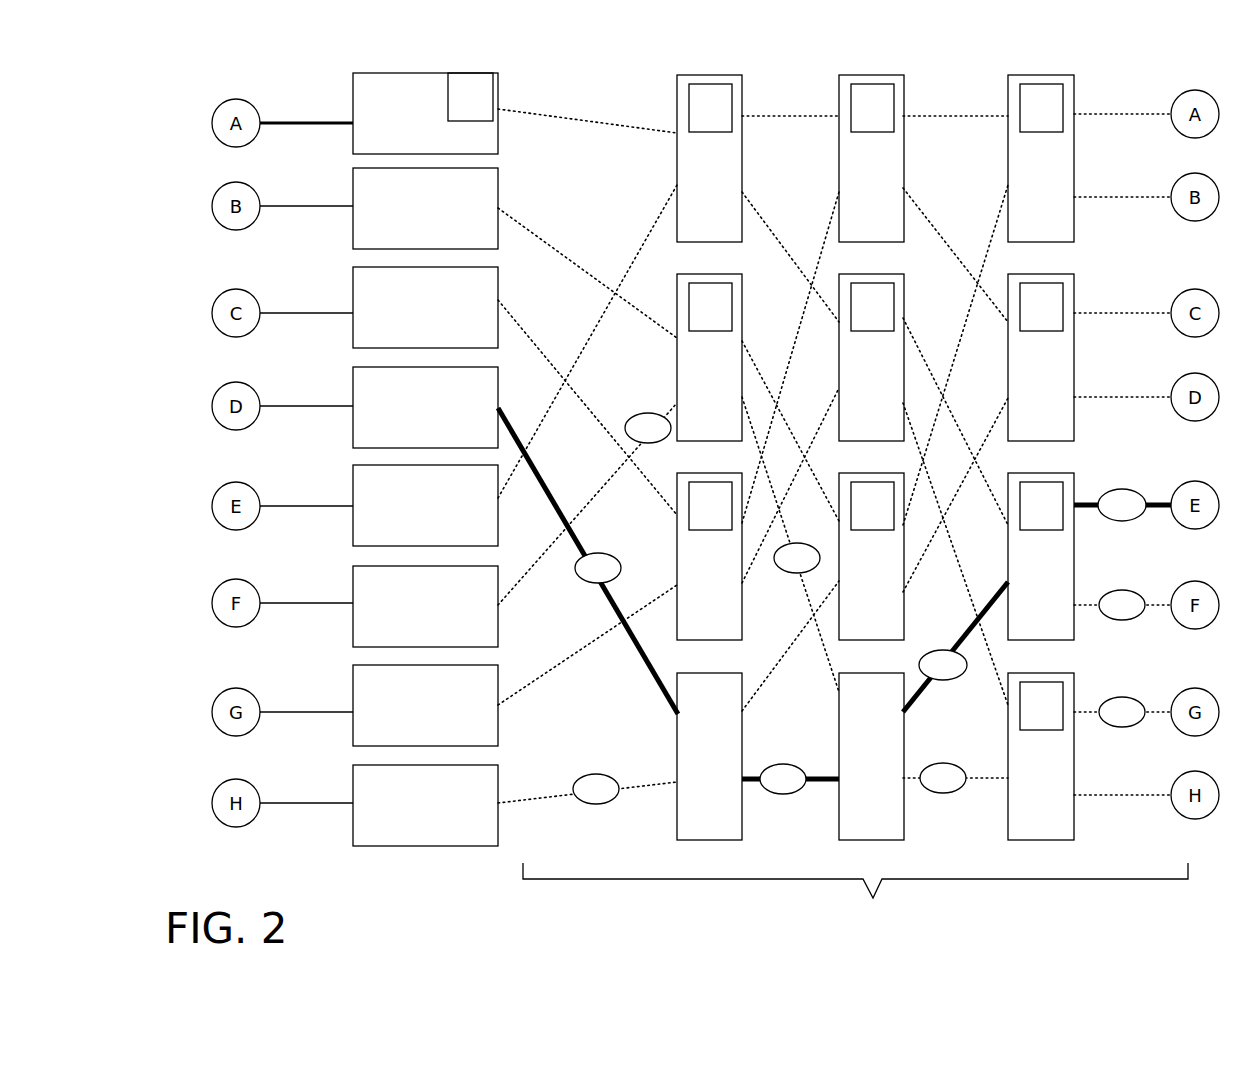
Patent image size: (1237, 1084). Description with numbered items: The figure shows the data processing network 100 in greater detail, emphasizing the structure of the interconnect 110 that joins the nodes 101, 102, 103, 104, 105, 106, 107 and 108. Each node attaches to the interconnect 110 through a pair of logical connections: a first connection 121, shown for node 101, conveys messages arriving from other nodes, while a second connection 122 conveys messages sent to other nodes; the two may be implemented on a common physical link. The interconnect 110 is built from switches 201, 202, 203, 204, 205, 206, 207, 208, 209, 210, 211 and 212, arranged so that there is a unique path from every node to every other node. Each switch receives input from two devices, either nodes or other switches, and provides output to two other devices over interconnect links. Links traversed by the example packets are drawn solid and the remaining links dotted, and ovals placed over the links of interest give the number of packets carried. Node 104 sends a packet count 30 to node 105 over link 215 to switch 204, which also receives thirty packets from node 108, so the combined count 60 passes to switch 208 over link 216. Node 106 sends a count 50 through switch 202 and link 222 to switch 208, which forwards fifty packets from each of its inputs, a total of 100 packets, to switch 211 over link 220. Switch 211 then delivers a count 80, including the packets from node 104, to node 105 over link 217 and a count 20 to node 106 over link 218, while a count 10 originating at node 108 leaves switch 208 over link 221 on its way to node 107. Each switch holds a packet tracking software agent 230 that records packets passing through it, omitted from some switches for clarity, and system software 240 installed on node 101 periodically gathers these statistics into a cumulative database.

The node 101 is at (411, 125).
The node 102 is at (411, 220).
The node 103 is at (411, 319).
The node 104 is at (411, 419).
The node 105 is at (411, 517).
The node 106 is at (411, 618).
The node 107 is at (411, 717).
The node 108 is at (411, 817).
The interconnect 110 is at (873, 898).
The first connection 121 is at (312, 120).
The second connection 122 is at (529, 112).
The switch 201 is at (694, 234).
The switch 202 is at (694, 433).
The switch 203 is at (694, 632).
The switch 204 is at (694, 832).
The switch 205 is at (856, 234).
The switch 206 is at (856, 433).
The switch 207 is at (856, 632).
The switch 208 is at (856, 832).
The switch 209 is at (1026, 234).
The switch 210 is at (1026, 433).
The switch 211 is at (1026, 632).
The switch 212 is at (1026, 832).
The link 215 is at (648, 661).
The link 216 is at (828, 788).
The link 217 is at (1079, 512).
The link 218 is at (1079, 610).
The link 220 is at (921, 694).
The link 221 is at (992, 785).
The link 222 is at (818, 660).
The packet tracking software agent 230 is at (729, 122).
The system software 240 is at (490, 109).
The packet count 30 is at (597, 678).
The packet count 50 is at (722, 493).
The link weight 60 is at (783, 779).
The network 100 is at (943, 665).
The packet count 10 is at (1032, 745).
The packet count 80 is at (1122, 505).
The packet count 20 is at (1122, 605).